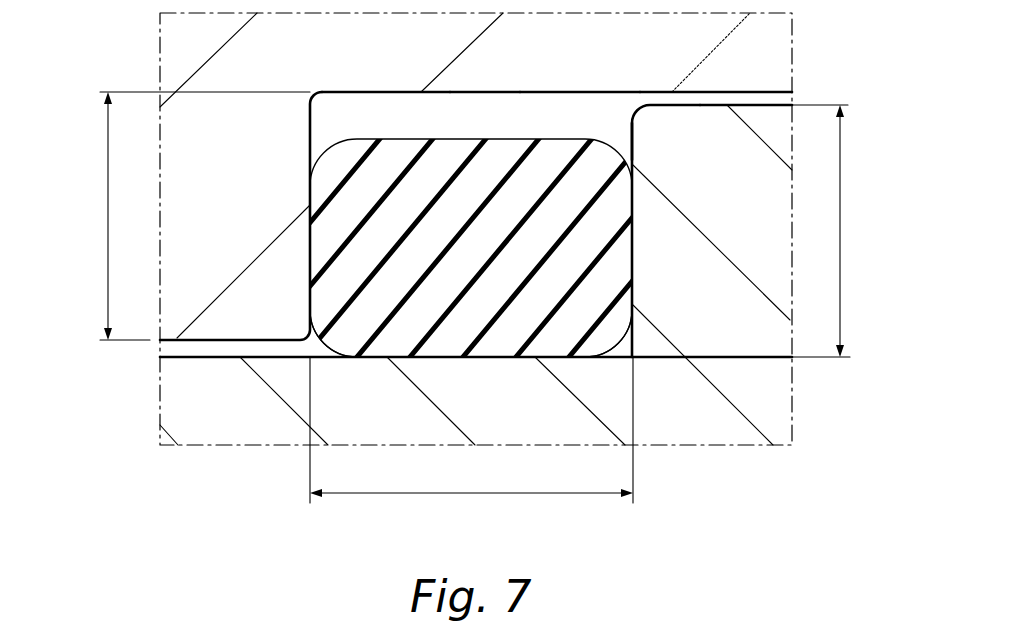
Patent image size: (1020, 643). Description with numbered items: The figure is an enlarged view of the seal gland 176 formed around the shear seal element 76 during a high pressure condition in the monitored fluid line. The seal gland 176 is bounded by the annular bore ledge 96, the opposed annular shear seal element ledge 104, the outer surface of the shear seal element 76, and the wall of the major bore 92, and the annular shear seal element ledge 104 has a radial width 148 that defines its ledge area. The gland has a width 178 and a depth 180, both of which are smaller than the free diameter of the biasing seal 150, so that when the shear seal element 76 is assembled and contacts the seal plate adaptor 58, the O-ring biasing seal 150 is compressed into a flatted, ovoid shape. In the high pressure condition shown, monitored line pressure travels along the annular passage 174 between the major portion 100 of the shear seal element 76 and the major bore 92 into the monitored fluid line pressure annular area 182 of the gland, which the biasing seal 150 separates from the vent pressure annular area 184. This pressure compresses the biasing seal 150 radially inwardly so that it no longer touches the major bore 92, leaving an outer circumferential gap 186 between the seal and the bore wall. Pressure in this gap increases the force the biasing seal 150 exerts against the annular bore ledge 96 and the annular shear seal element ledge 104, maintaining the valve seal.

The seal plate adaptor 58 is at (165, 43).
The shear seal element 76 is at (777, 397).
The major bore 92 is at (697, 100).
The annular bore ledge 96 is at (311, 117).
The major portion 100 is at (662, 120).
The annular shear seal element ledge 104 is at (632, 125).
The radial width 148 is at (840, 228).
The biasing seal 150 is at (498, 345).
The annular passage 174 is at (745, 100).
The seal gland 176 is at (540, 107).
The width 178 is at (470, 493).
The depth 180 is at (107, 220).
The monitored fluid line pressure annular area 182 is at (473, 107).
The vent pressure annular area 184 is at (327, 348).
The outer circumferential gap 186 is at (405, 105).